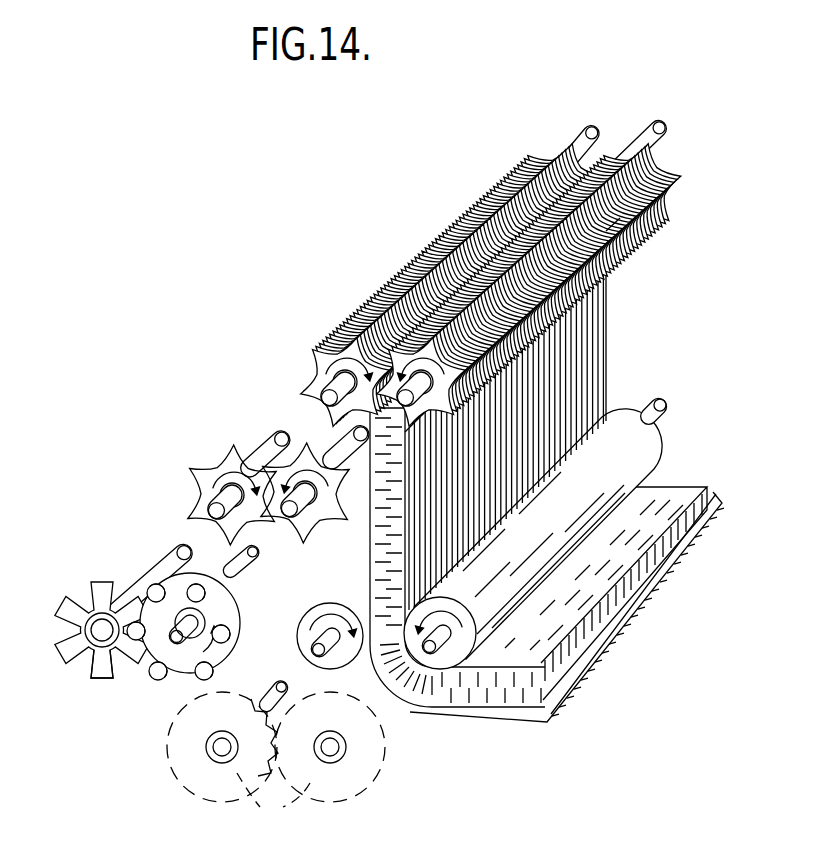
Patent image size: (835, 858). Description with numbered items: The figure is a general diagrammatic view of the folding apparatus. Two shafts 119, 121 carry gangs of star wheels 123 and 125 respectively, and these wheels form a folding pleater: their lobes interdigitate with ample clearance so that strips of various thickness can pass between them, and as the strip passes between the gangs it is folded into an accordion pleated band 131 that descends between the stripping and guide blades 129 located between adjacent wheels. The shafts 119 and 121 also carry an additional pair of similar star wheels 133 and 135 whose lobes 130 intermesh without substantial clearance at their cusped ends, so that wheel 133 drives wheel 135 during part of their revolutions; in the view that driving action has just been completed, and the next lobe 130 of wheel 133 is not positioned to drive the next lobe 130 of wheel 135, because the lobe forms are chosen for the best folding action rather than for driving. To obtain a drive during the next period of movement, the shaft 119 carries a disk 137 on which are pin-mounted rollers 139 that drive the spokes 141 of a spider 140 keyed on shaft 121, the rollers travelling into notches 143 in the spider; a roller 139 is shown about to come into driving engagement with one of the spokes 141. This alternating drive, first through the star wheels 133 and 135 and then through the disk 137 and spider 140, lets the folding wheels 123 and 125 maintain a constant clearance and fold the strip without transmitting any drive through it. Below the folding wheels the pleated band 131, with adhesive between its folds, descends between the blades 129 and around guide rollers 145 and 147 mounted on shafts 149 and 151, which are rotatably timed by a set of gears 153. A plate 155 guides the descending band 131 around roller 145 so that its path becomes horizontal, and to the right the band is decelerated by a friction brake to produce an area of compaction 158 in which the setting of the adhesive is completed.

The shaft 119 is at (650, 158).
The shaft 121 is at (573, 157).
The gang of star wheels 123 is at (632, 221).
The gang of star wheels 125 is at (430, 236).
The stripping and guide blades 129 is at (597, 320).
The lobes 130 is at (220, 457).
The accordion pleated band 131 is at (372, 552).
The star wheel 133 is at (332, 537).
The star wheel 135 is at (205, 502).
The disk 137 is at (223, 650).
The rollers 139 is at (158, 673).
The spider 140 is at (85, 655).
The spokes 141 is at (105, 665).
The notches 143 is at (87, 595).
The guide roller 145 is at (552, 547).
The guide roller 147 is at (298, 634).
The shaft 149 is at (444, 625).
The shaft 151 is at (322, 632).
The set of gears 153 is at (287, 807).
The plate 155 is at (413, 717).
The area of compaction 158 is at (508, 697).